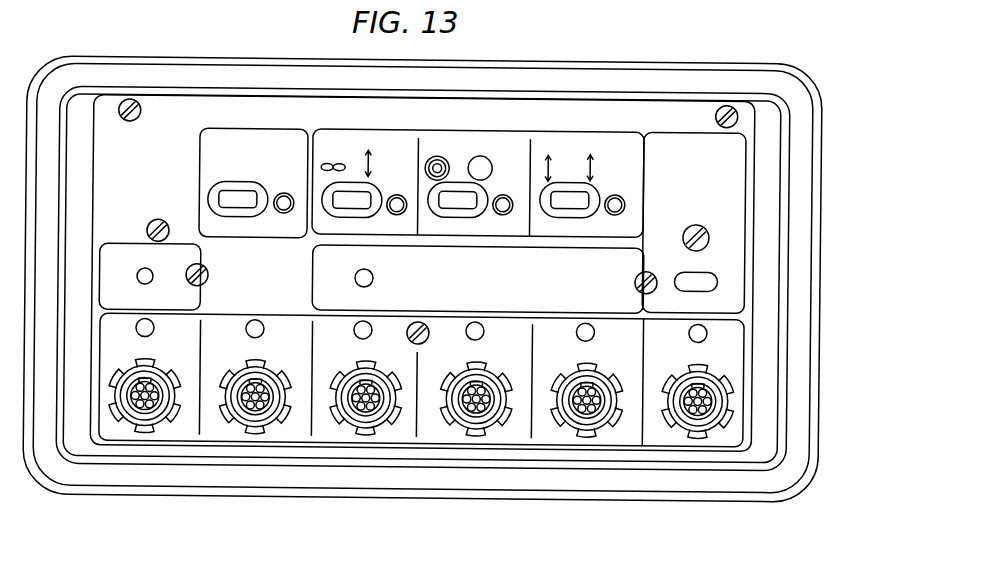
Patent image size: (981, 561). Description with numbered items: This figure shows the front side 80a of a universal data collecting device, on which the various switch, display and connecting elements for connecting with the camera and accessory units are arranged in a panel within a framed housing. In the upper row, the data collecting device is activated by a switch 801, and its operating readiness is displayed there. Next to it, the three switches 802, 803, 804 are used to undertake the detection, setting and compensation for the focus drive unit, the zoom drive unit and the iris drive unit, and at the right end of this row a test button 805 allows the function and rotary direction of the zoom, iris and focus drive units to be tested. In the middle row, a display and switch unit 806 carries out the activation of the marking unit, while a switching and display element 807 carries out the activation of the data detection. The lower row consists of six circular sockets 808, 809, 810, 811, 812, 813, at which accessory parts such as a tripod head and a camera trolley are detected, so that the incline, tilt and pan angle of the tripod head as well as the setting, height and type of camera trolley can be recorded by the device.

The front side 80a is at (573, 60).
The switch 801 is at (214, 142).
The switch 802 is at (356, 141).
The switch 803 is at (458, 140).
The switch 804 is at (574, 140).
The test button 805 is at (729, 175).
The display and switch unit 806 is at (183, 298).
The switching and display element 807 is at (517, 288).
The socket 808 is at (170, 436).
The socket 809 is at (282, 434).
The socket 810 is at (397, 433).
The socket 811 is at (504, 436).
The socket 812 is at (615, 437).
The socket 813 is at (730, 437).